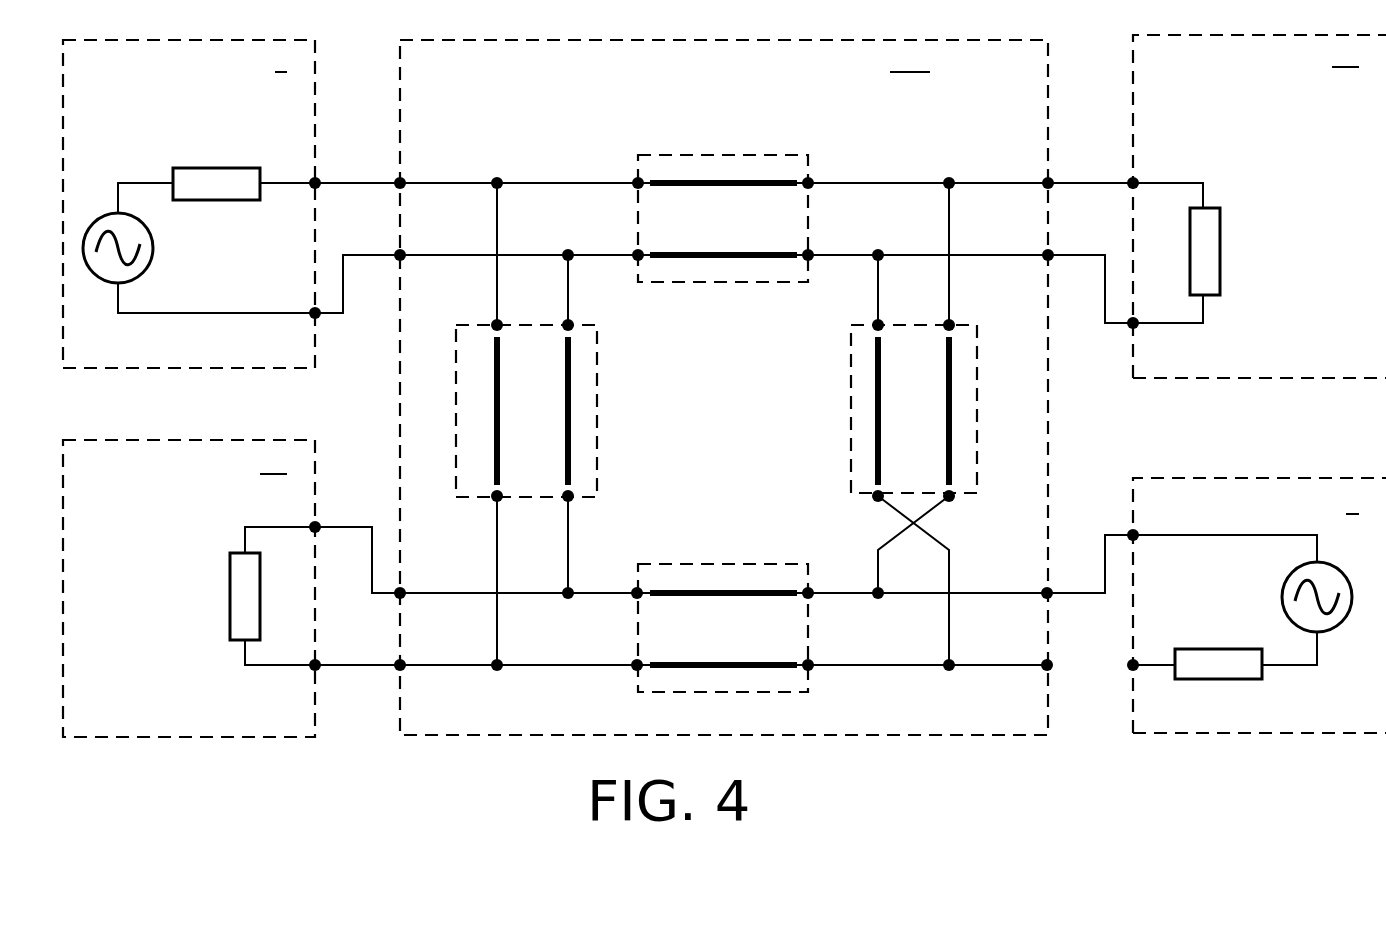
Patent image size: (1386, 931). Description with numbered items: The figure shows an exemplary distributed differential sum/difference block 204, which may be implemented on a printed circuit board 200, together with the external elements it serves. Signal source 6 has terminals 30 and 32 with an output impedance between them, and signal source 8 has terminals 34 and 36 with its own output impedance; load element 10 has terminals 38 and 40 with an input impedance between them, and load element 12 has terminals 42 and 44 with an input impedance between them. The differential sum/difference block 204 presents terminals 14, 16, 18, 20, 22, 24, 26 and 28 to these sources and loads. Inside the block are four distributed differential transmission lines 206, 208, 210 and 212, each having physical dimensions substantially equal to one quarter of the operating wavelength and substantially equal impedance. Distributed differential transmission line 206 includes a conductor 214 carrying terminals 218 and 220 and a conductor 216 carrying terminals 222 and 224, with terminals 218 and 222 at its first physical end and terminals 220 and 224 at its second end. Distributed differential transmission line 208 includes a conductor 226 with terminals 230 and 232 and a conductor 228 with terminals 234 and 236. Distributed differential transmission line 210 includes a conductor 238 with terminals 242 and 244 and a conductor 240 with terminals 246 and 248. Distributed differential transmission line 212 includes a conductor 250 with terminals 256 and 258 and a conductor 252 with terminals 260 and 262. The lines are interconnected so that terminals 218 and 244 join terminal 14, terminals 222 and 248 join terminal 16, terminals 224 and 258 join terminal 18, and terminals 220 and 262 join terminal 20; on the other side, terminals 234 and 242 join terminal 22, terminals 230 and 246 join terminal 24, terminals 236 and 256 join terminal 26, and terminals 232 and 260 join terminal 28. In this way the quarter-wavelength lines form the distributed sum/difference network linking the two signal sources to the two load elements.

The signal source 6 is at (189, 204).
The signal source 8 is at (1216, 605).
The load element 10 is at (231, 588).
The load element 12 is at (1217, 206).
The terminal 14 is at (402, 180).
The terminal 16 is at (402, 252).
The terminal 18 is at (402, 591).
The terminal 20 is at (402, 667).
The terminal 22 is at (1046, 180).
The terminal 24 is at (1046, 253).
The terminal 26 is at (1046, 590).
The terminal 28 is at (1046, 662).
The terminal 30 is at (318, 187).
The terminal 32 is at (318, 316).
The terminal 34 is at (1131, 667).
The terminal 36 is at (1131, 533).
The terminal 38 is at (317, 669).
The terminal 40 is at (317, 524).
The terminal 42 is at (1131, 181).
The terminal 44 is at (1131, 325).
The printed circuit board 200 is at (952, 790).
The distributed differential sum/difference block 204 is at (724, 387).
The distributed differential transmission line 206 is at (597, 361).
The distributed differential transmission line 208 is at (851, 440).
The distributed differential transmission line 210 is at (760, 284).
The distributed differential transmission line 212 is at (668, 564).
The conductor 214 is at (500, 393).
The conductor 216 is at (566, 410).
The terminal 218 is at (495, 322).
The terminal 220 is at (495, 500).
The terminal 222 is at (570, 323).
The terminal 224 is at (570, 500).
The conductor 226 is at (880, 395).
The conductor 228 is at (946, 410).
The terminal 230 is at (876, 322).
The terminal 232 is at (876, 500).
The terminal 234 is at (951, 322).
The terminal 236 is at (951, 500).
The conductor 238 is at (735, 186).
The conductor 240 is at (742, 252).
The terminal 242 is at (810, 181).
The terminal 244 is at (636, 181).
The terminal 246 is at (810, 253).
The terminal 248 is at (636, 253).
The conductor 250 is at (735, 596).
The conductor 252 is at (745, 660).
The terminal 256 is at (810, 590).
The terminal 258 is at (635, 590).
The terminal 260 is at (810, 667).
The terminal 262 is at (635, 667).